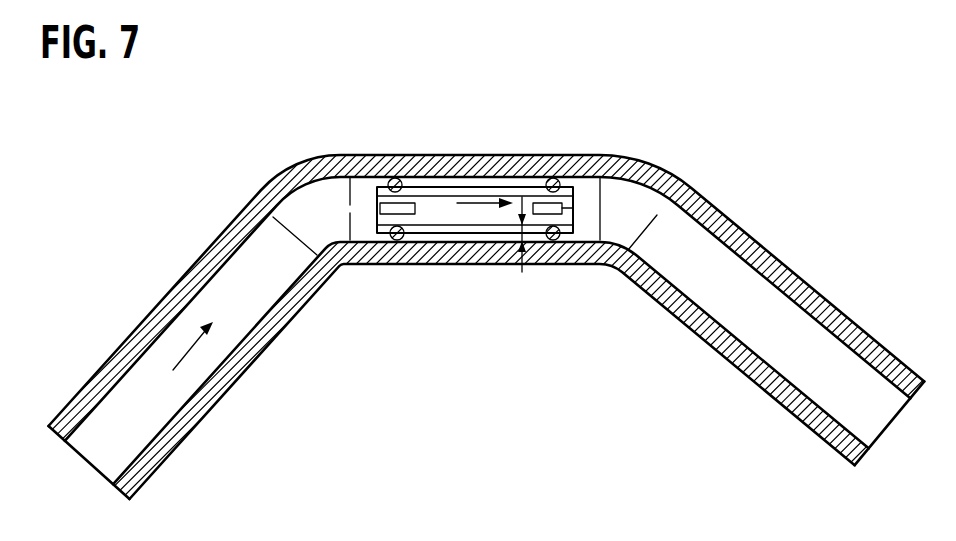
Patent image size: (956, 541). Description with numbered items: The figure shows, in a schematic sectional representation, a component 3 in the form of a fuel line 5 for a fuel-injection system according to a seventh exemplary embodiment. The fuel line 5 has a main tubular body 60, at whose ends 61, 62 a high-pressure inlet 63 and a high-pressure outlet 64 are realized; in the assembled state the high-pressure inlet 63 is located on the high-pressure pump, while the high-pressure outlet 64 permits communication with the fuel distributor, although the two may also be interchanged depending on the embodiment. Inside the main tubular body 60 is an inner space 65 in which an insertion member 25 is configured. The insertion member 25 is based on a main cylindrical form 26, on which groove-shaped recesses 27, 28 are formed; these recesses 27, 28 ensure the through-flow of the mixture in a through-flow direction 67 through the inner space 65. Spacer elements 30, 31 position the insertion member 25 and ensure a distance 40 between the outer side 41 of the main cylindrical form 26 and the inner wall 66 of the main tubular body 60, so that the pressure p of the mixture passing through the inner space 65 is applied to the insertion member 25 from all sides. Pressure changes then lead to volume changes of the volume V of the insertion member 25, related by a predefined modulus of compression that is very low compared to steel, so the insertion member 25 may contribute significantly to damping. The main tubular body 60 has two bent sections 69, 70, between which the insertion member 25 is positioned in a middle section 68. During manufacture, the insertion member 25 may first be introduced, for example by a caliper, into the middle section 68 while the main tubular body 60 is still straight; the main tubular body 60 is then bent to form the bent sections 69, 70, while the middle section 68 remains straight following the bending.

The component 3 is at (478, 270).
The fuel line 5 is at (150, 177).
The insertion member 25 is at (466, 217).
The main cylindrical form 26 is at (433, 233).
The recess 27 is at (377, 209).
The recess 28 is at (575, 208).
The spacer element 30 is at (396, 183).
The spacer element 31 is at (556, 184).
The distance 40 is at (533, 248).
The outer side 41 is at (459, 187).
The main tubular body 60 is at (755, 243).
The end 61 is at (87, 402).
The end 62 is at (894, 357).
The high-pressure inlet 63 is at (62, 427).
The high-pressure outlet 64 is at (908, 377).
The inner space 65 is at (746, 318).
The inner wall 66 is at (430, 235).
The through-flow direction 67 is at (187, 353).
The middle section 68 is at (476, 233).
The bent section 69 is at (297, 172).
The bent section 70 is at (644, 173).
The volume V is at (532, 200).
The pressure p is at (800, 353).